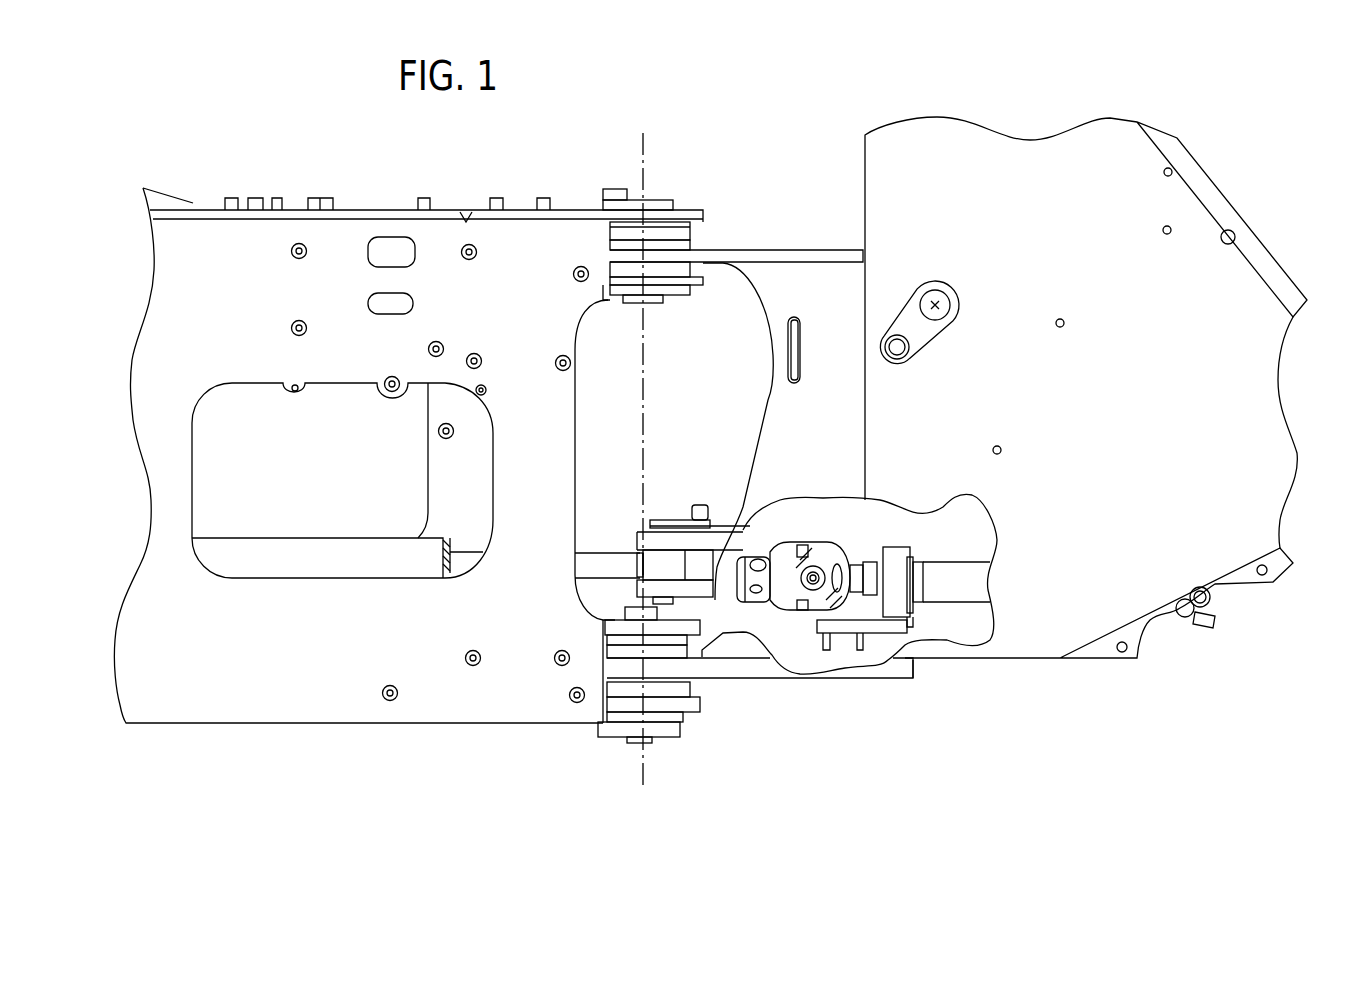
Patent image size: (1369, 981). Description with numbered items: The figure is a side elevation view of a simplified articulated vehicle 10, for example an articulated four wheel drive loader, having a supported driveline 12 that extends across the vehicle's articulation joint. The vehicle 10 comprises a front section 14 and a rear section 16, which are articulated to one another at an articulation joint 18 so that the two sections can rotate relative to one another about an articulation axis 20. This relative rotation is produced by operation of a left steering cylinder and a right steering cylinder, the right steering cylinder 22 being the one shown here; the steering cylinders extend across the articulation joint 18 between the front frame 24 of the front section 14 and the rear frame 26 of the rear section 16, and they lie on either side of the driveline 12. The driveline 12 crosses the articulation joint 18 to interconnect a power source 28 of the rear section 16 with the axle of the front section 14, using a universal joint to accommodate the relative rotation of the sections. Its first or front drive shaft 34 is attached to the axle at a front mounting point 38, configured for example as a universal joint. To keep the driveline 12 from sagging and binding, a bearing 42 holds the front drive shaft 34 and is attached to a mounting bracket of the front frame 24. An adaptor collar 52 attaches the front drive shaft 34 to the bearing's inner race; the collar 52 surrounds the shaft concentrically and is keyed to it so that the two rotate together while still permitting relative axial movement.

The articulated vehicle 10 is at (258, 170).
The supported driveline 12 is at (855, 528).
The front section 14 is at (1035, 115).
The rear section 16 is at (468, 186).
The articulation joint 18 is at (687, 210).
The articulation axis 20 is at (643, 140).
The right steering cylinder 22 is at (273, 547).
The front frame 24 is at (997, 660).
The rear frame 26 is at (410, 707).
The power source 28 is at (812, 573).
The front drive shaft 34 is at (960, 570).
The front mounting point 38 is at (1217, 585).
The bearing 42 is at (913, 547).
The adaptor collar 52 is at (883, 540).